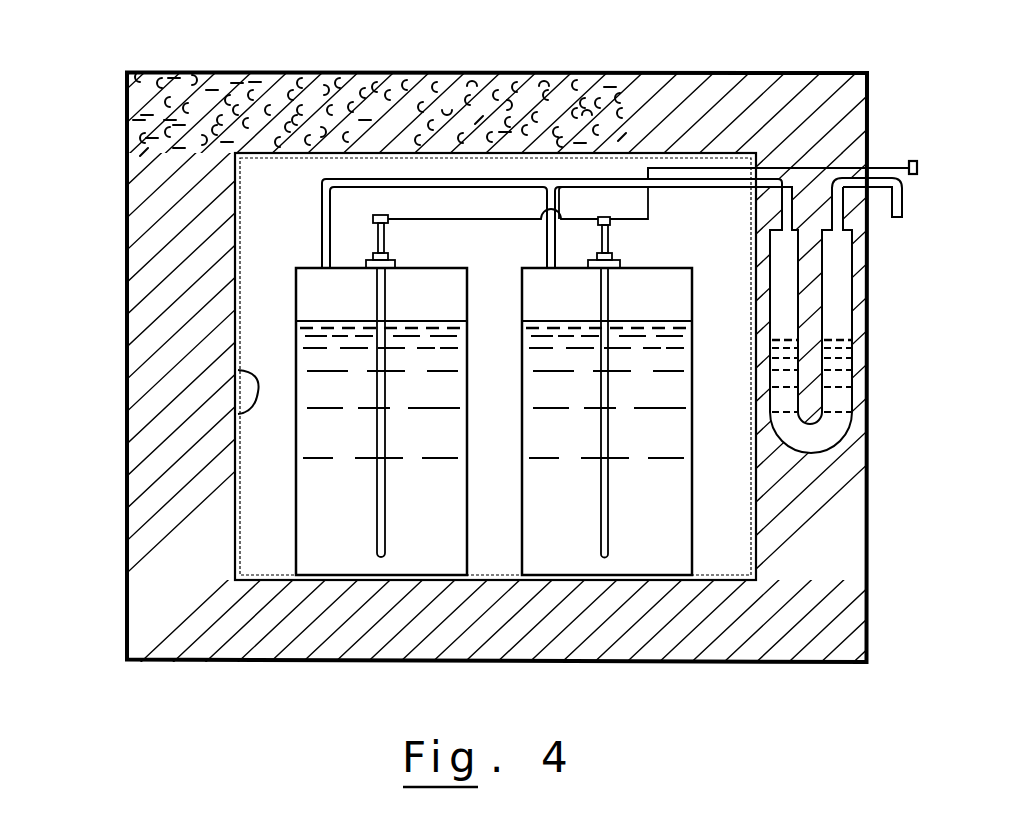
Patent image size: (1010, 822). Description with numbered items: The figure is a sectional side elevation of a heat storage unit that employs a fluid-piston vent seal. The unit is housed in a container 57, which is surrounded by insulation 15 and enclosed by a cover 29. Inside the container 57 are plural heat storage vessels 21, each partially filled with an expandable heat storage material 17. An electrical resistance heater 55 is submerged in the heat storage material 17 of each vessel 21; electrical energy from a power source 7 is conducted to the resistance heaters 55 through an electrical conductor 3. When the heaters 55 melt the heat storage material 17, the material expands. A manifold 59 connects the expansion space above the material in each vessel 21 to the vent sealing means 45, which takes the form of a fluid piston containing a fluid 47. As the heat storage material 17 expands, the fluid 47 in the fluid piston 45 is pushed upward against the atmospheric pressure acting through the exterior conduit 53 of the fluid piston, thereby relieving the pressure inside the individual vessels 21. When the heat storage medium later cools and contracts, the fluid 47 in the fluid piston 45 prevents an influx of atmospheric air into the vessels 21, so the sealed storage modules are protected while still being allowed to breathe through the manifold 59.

The electrical conductor 3 is at (866, 170).
The power source 7 is at (918, 167).
The insulation 15 is at (185, 268).
The expandable heat storage material 17 is at (672, 488).
The heat storage vessel 21 is at (300, 330).
The cover 29 is at (127, 188).
The vent sealing means (fluid piston) 45 is at (865, 323).
The fluid 47 is at (833, 425).
The exterior conduit 53 is at (905, 195).
The electrical resistance heater 55 is at (607, 530).
The container 57 is at (240, 412).
The manifold 59 is at (377, 179).